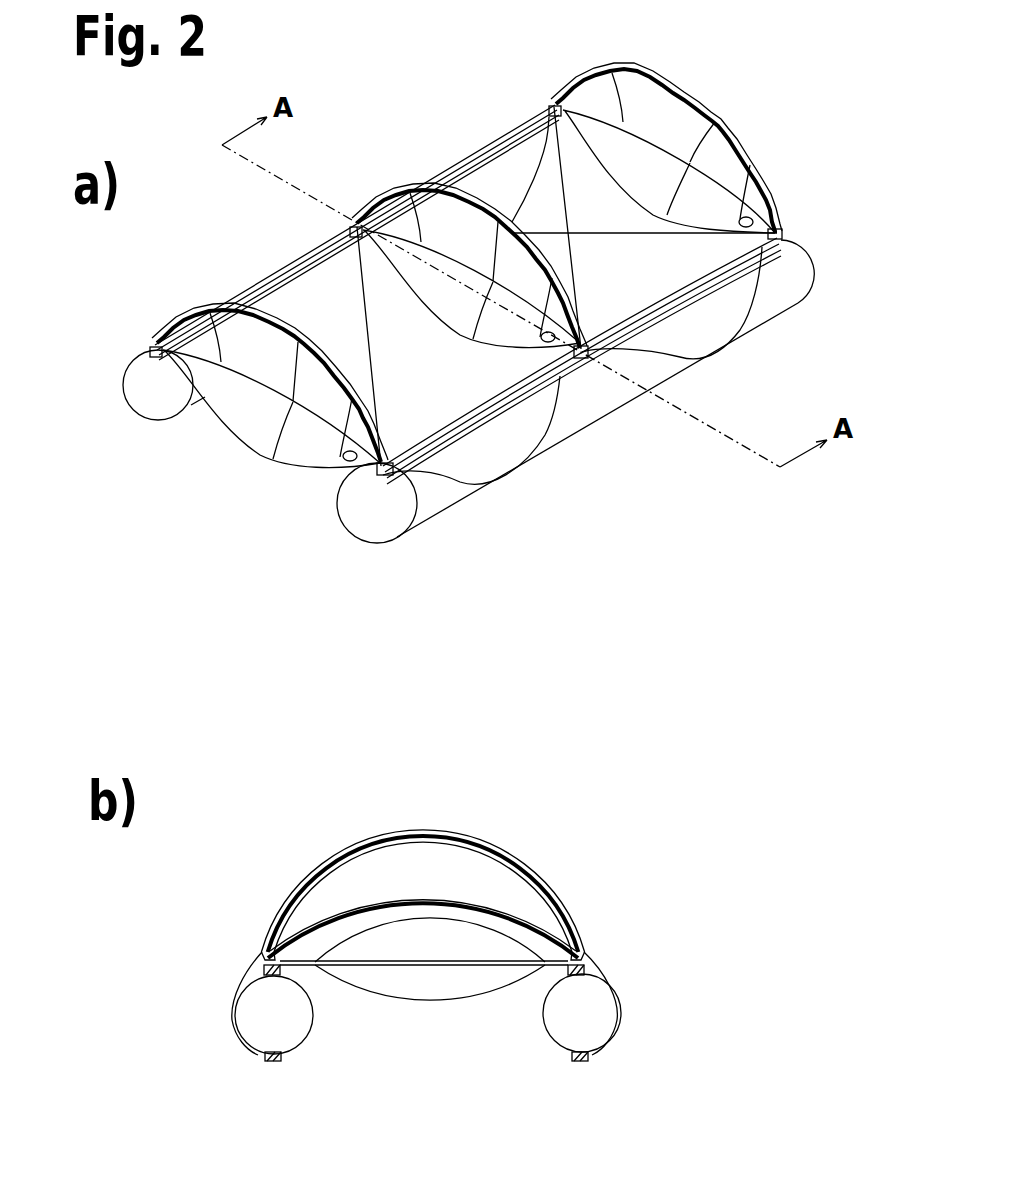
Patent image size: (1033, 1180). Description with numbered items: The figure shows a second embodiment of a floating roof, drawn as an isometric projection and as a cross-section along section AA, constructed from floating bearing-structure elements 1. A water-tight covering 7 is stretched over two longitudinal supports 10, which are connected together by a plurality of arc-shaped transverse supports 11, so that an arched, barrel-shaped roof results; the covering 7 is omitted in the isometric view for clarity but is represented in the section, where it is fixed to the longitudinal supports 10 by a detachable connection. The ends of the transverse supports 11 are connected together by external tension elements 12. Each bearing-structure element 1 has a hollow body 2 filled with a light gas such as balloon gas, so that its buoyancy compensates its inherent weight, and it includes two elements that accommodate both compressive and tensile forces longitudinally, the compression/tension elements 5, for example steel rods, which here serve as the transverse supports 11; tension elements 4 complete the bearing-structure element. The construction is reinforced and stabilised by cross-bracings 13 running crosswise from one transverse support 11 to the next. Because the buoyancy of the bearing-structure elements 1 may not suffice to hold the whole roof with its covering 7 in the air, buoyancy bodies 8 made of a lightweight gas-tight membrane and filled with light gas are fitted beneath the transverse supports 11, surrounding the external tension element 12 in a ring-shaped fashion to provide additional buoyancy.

In FIG. 2a, the bearing-structure element 1 is at (385, 213).
In FIG. 2b, the bearing-structure element 1 is at (520, 895).
In FIG. 2a, the hollow body 2 is at (425, 500).
In FIG. 2b, the hollow body 2 is at (582, 1013).
In FIG. 2a, the tension elements 4 is at (490, 483).
In FIG. 2a, the compression/tension element 5 is at (437, 450).
In FIG. 2b, the compression/tension element 5 is at (342, 916).
In FIG. 2b, the water-tight covering 7 is at (603, 972).
In FIG. 2a, the buoyancy body 8 is at (253, 427).
In FIG. 2b, the buoyancy body 8 is at (420, 993).
In FIG. 2a, the longitudinal supports 10 is at (612, 441).
In FIG. 2b, the longitudinal supports 10 is at (297, 1061).
In FIG. 2a, the transverse supports 11 is at (380, 183).
In FIG. 2b, the transverse supports 11 is at (475, 824).
In FIG. 2a, the external tension elements 12 is at (355, 460).
In FIG. 2b, the external tension elements 12 is at (300, 967).
In FIG. 2a, the cross-bracings 13 is at (588, 233).